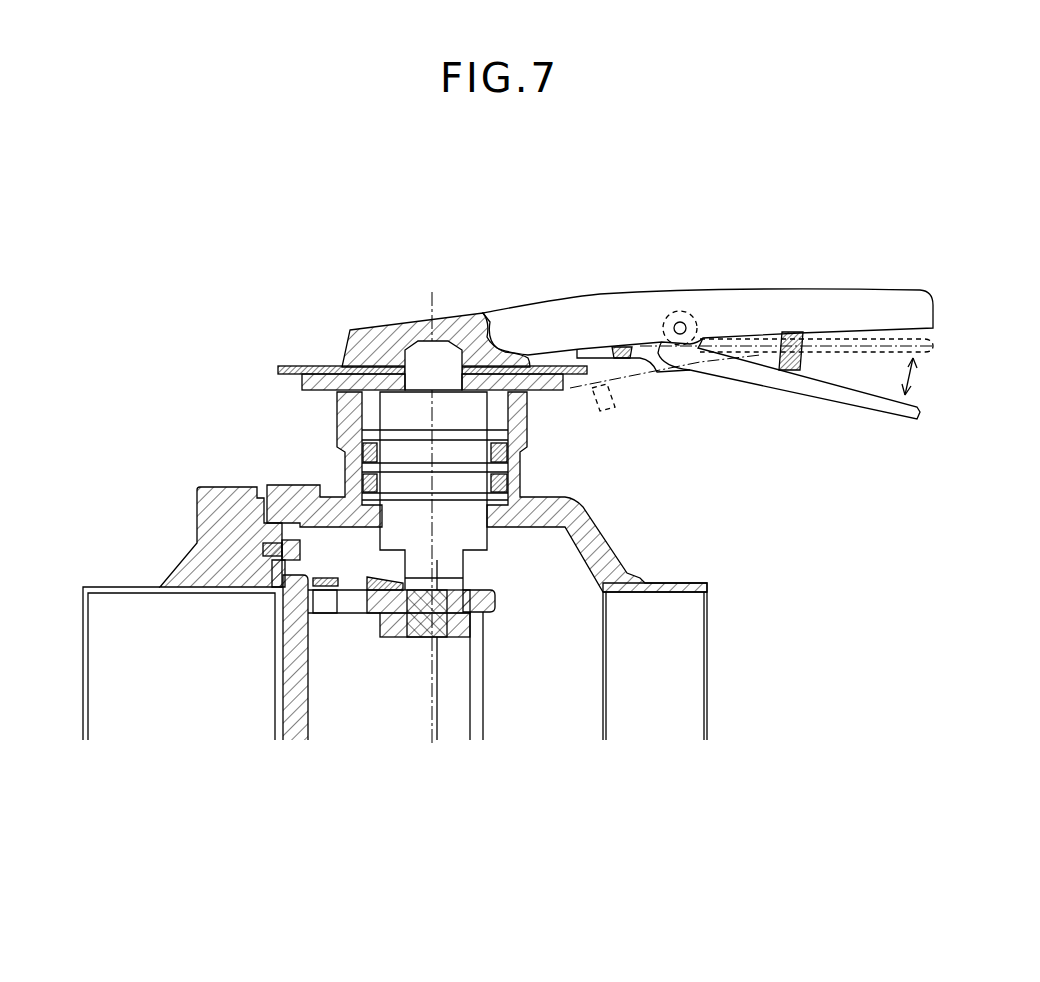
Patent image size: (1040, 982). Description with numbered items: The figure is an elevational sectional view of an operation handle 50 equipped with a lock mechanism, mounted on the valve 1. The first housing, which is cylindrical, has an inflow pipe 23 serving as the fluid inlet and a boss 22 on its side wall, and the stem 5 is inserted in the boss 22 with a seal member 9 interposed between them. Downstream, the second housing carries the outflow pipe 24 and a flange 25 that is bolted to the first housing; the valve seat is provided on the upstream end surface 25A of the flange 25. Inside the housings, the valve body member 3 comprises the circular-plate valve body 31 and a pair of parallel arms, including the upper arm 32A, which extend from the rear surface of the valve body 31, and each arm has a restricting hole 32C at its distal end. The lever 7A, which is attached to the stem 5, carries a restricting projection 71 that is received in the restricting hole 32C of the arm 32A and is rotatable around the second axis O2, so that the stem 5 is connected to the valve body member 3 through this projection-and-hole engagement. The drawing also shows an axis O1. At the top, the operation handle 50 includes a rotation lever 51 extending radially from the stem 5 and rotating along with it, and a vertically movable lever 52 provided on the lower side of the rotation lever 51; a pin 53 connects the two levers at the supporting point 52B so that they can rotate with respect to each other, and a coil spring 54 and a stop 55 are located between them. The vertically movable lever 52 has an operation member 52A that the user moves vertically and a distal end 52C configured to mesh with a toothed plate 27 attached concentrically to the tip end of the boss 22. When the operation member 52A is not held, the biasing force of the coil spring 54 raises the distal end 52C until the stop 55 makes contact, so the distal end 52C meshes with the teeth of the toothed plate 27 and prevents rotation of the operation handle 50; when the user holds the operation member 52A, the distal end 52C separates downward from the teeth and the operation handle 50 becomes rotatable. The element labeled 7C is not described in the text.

The valve 1 is at (262, 393).
The valve body member 3 is at (377, 657).
The stem 5 is at (488, 537).
The lever 7A is at (496, 598).
The valve stem 7C is at (484, 681).
The seal member 9 is at (509, 456).
The boss 22 is at (526, 485).
The inflow pipe 23 is at (672, 583).
The outflow pipe 24 is at (118, 587).
The flange 25 is at (222, 487).
The upstream end surface 25A is at (293, 542).
The toothed plate 27 is at (527, 357).
The valve body 31 is at (302, 709).
The arm 32A is at (328, 630).
The restricting hole 32C is at (398, 604).
The operation handle 50 is at (619, 250).
The rotation lever 51 is at (808, 290).
The vertically movable lever 52 is at (935, 346).
The operation member 52A is at (846, 402).
The supporting point 52B is at (686, 348).
The distal end 52C is at (601, 374).
The pin 53 is at (681, 322).
The coil spring 54 is at (790, 334).
The stop 55 is at (622, 348).
The restricting projection 71 is at (440, 620).
The axis O1 is at (430, 294).
The second axis O2 is at (432, 640).